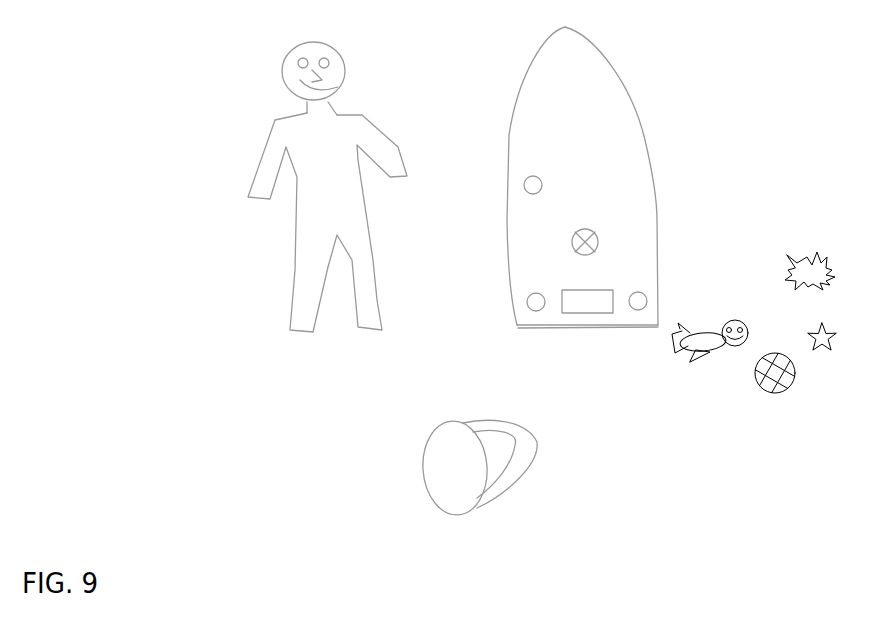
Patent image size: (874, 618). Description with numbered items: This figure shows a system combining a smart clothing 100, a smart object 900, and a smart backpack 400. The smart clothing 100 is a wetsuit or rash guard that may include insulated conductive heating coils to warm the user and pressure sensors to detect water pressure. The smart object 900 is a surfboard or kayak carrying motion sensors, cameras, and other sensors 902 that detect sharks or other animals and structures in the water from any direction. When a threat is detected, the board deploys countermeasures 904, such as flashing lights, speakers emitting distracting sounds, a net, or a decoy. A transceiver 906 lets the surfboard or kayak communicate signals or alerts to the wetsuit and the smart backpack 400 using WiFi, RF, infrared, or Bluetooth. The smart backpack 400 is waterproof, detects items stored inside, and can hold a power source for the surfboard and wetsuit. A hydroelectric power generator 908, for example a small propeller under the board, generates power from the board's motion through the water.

The smart clothing 100 is at (272, 157).
The smart backpack 400 is at (438, 447).
The smart object 900 is at (640, 143).
The sensors 902 is at (637, 308).
The countermeasures 904 is at (813, 327).
The transceiver 906 is at (525, 193).
The hydroelectric power generator 908 is at (572, 248).